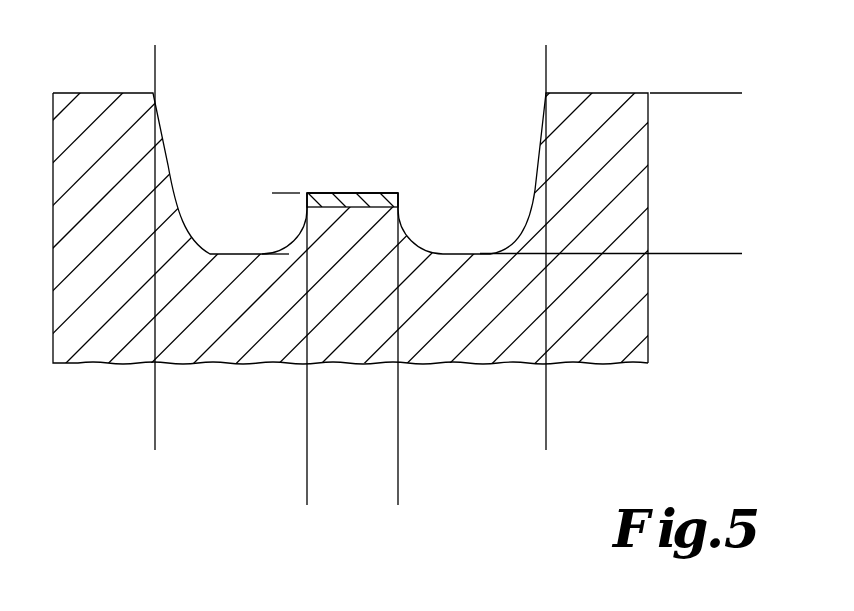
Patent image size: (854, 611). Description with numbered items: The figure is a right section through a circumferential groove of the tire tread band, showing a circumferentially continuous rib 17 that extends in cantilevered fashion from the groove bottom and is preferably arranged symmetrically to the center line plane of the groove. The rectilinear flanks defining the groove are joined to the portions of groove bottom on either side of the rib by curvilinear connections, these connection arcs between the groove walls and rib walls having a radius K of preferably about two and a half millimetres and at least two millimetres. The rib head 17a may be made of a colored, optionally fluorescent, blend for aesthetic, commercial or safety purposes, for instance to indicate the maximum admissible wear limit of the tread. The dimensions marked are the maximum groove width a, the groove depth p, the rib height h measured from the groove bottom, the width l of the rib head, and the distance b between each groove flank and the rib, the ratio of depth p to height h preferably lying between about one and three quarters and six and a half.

The rib 17 is at (350, 225).
The rib head 17a is at (382, 194).
The maximum width of the groove a is at (546, 53).
The gap width dimension b is at (307, 442).
The rib height h is at (281, 193).
The depth of the groove p is at (733, 93).
The width of the rib head l is at (398, 495).
The radius of the connection arcs K is at (266, 143).